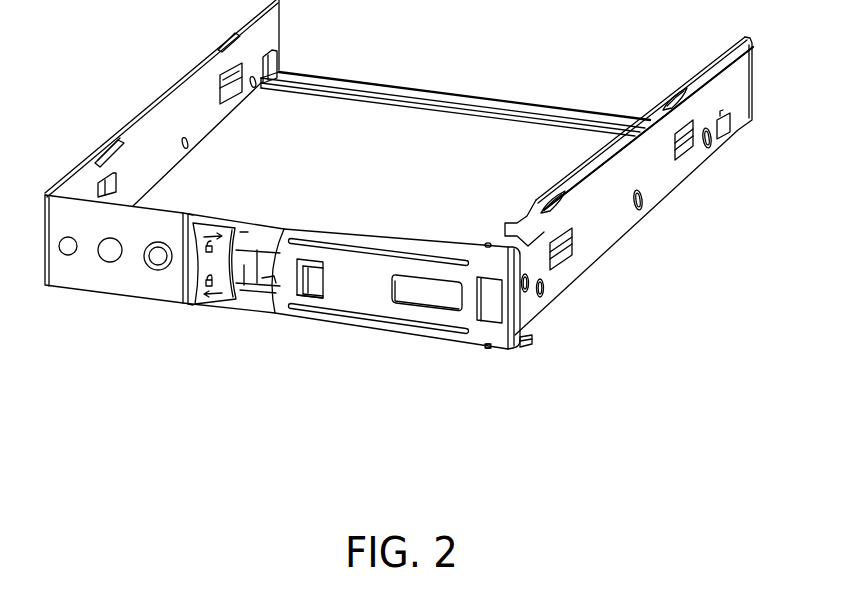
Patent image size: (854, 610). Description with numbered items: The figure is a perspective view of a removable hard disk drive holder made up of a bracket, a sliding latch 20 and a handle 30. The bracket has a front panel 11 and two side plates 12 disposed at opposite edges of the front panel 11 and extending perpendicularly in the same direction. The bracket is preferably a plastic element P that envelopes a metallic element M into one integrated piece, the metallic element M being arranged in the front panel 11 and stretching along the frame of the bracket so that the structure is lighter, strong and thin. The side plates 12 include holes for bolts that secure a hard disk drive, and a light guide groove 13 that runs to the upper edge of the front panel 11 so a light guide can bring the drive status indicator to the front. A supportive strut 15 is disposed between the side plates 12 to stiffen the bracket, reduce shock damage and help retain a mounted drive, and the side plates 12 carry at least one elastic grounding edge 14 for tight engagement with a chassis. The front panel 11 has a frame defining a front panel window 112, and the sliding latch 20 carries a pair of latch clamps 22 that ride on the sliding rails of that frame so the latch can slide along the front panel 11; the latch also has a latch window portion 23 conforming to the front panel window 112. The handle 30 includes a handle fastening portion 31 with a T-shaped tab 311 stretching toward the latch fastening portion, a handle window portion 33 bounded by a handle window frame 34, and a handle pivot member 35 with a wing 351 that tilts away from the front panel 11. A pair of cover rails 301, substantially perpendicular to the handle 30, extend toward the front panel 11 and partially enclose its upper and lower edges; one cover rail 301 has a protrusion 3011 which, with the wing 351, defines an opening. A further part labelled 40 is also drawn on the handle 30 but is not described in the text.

The front panel 11 is at (191, 222).
The front panel window 112 is at (197, 291).
The side plates 12 is at (181, 106).
The light guide groove 13 is at (636, 154).
The elastic grounding edge 14 is at (679, 97).
The supportive strut 15 is at (441, 92).
The sliding latch 20 is at (248, 242).
The latch clamps 22 is at (255, 284).
The latch window portion 23 is at (261, 250).
The handle 30 is at (370, 273).
The handle fastening portion 31 is at (373, 329).
The T-shaped tab 311 is at (307, 299).
The handle window portion 33 is at (321, 278).
The handle window frame 34 is at (322, 272).
The handle pivot member 35 is at (572, 298).
The wing 351 is at (514, 314).
The pin 40 is at (489, 351).
The cover rails 301 is at (539, 396).
The protrusion 3011 is at (531, 350).
The metallic element M is at (547, 286).
The plastic element P is at (643, 204).